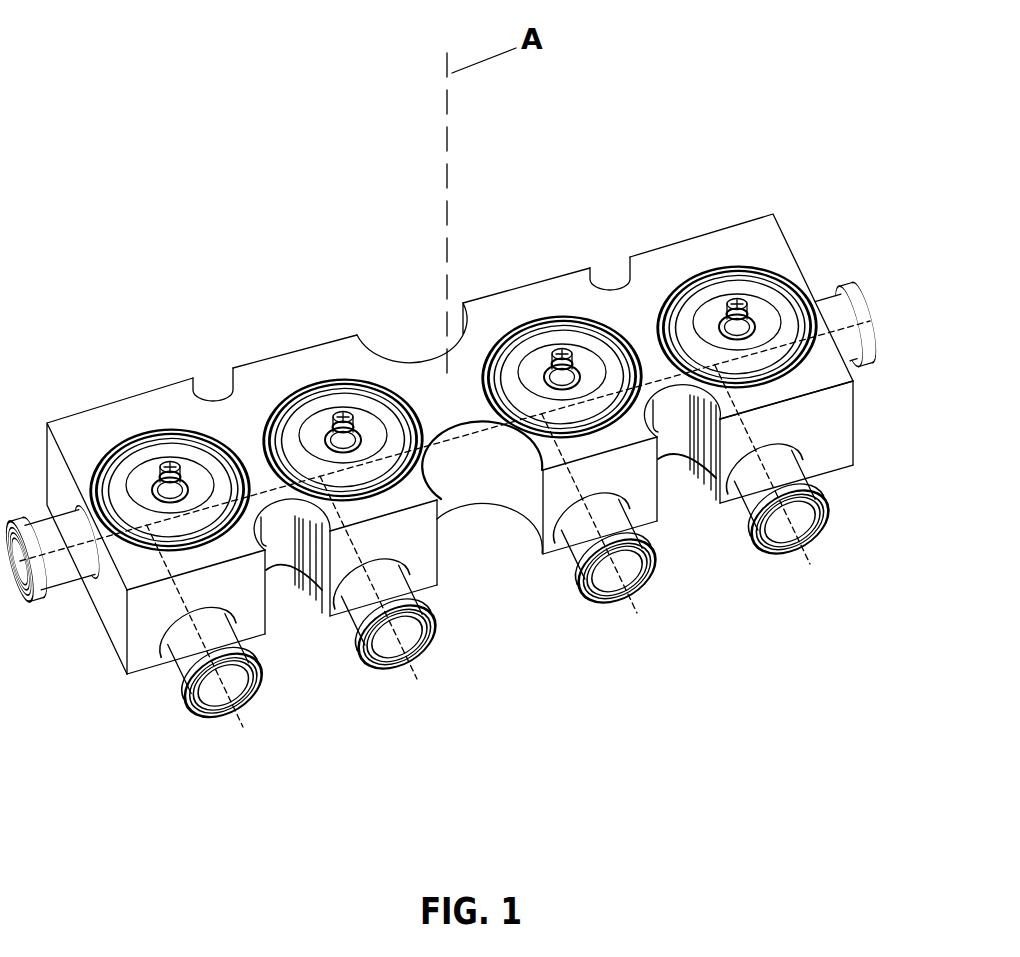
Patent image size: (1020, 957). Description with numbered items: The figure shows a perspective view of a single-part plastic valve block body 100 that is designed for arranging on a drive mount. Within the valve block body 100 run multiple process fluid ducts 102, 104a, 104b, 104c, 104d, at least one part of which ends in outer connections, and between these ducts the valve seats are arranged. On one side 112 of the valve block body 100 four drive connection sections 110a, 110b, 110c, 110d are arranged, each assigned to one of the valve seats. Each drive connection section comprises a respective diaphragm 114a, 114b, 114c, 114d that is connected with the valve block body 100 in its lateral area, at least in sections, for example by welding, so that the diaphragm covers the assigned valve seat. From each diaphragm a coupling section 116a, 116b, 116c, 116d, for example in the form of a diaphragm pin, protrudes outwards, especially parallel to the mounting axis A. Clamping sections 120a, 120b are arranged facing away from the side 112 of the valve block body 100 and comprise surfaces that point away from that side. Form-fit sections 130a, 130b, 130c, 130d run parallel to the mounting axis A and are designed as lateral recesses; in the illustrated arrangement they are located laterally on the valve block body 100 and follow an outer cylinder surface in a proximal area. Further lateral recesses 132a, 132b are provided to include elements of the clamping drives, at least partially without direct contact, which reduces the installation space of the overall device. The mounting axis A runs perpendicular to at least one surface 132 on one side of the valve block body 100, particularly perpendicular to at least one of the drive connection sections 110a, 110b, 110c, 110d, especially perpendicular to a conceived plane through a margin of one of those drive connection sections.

The valve block body 100 is at (213, 98).
The process fluid duct 102 is at (268, 470).
The process fluid duct 104a is at (748, 430).
The process fluid duct 104b is at (642, 520).
The process fluid duct 104c is at (396, 592).
The process fluid duct 104d is at (160, 612).
The drive connection section 110a is at (710, 226).
The drive connection section 110b is at (532, 280).
The drive connection section 110c is at (316, 343).
The drive connection section 110d is at (128, 395).
The side 112 is at (320, 200).
The diaphragm 114a is at (708, 300).
The diaphragm 114b is at (530, 358).
The diaphragm 114c is at (322, 418).
The diaphragm 114d is at (133, 468).
The coupling section 116a is at (737, 299).
The coupling section 116b is at (562, 349).
The coupling section 116c is at (346, 412).
The coupling section 116d is at (172, 462).
The clamping section 120a is at (680, 425).
The clamping section 120b is at (287, 533).
The form-fit section 130a is at (678, 470).
The form-fit section 130b is at (283, 577).
The form-fit section 130c is at (210, 364).
The form-fit section 130d is at (608, 255).
The surface 132 is at (765, 230).
The lateral recess 132a is at (495, 556).
The lateral recess 132b is at (420, 324).